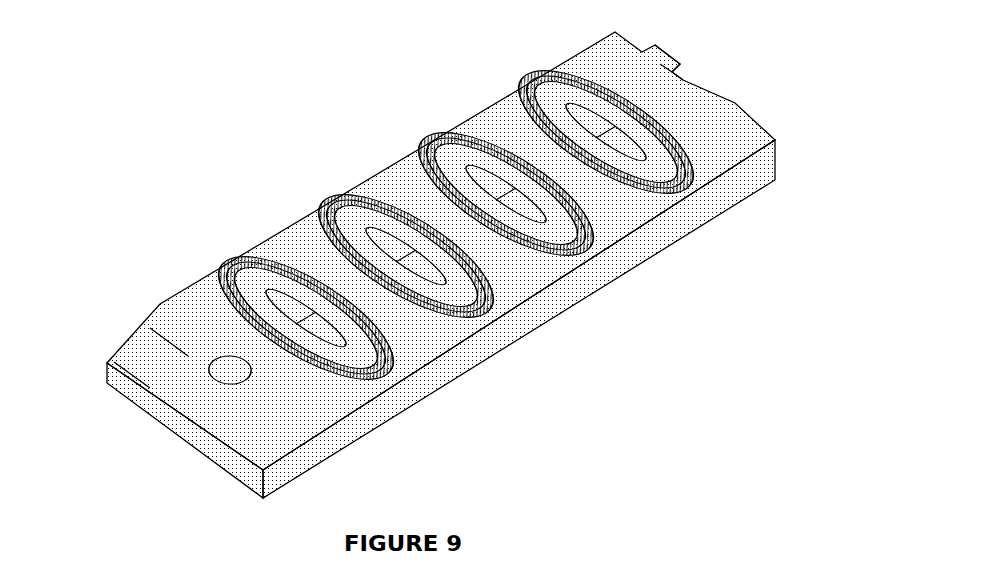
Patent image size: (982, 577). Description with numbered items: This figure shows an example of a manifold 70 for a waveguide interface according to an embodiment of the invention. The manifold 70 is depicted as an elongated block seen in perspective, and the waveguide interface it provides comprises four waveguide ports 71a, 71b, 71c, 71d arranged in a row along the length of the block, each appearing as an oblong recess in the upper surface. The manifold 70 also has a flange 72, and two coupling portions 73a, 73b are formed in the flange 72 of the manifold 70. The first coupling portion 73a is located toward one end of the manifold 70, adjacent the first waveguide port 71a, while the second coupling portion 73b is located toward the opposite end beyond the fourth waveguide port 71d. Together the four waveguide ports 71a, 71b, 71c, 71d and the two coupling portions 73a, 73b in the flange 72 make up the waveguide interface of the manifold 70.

The manifold 70 is at (164, 305).
The waveguide port 71a is at (350, 312).
The waveguide port 71b is at (450, 257).
The waveguide port 71c is at (530, 193).
The waveguide port 71d is at (620, 135).
The flange 72 is at (207, 394).
The coupling portion 73a is at (235, 370).
The coupling portion 73b is at (683, 77).